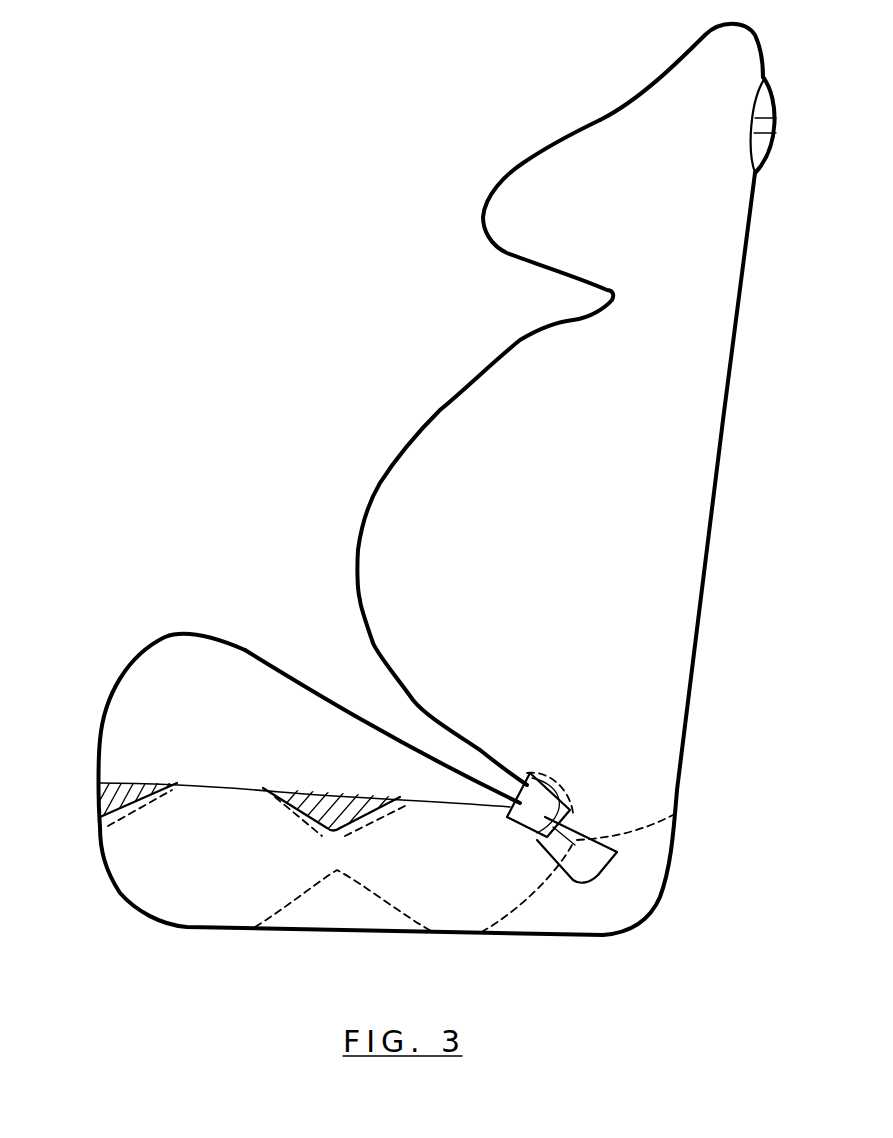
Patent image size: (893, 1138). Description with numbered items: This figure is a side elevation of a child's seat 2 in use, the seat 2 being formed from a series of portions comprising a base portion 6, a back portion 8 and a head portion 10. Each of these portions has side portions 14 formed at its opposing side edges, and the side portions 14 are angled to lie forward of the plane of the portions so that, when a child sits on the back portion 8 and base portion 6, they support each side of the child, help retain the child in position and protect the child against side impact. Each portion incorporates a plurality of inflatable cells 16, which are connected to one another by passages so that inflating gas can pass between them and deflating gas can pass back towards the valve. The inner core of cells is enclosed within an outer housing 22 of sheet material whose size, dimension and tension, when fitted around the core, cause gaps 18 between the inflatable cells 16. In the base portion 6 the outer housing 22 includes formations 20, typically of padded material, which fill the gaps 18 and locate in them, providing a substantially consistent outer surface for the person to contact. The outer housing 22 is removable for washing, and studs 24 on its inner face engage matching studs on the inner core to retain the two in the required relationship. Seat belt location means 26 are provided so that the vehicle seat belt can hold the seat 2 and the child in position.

The seat 2 is at (420, 400).
The base portion 6 is at (310, 832).
The back portion 8 is at (613, 522).
The head portion 10 is at (637, 145).
The side portions 14 is at (402, 498).
The inflatable cells 16 is at (183, 858).
The gaps 18 is at (102, 828).
The formations 20 is at (517, 798).
The outer housing 22 is at (773, 155).
The studs 24 is at (770, 122).
The seat belt location means 26 is at (585, 845).